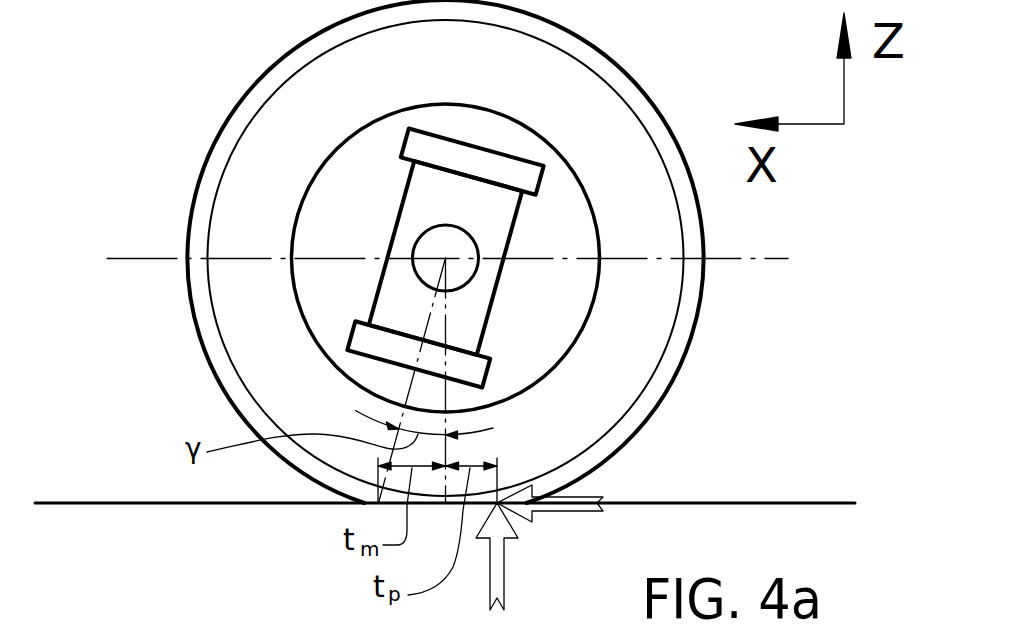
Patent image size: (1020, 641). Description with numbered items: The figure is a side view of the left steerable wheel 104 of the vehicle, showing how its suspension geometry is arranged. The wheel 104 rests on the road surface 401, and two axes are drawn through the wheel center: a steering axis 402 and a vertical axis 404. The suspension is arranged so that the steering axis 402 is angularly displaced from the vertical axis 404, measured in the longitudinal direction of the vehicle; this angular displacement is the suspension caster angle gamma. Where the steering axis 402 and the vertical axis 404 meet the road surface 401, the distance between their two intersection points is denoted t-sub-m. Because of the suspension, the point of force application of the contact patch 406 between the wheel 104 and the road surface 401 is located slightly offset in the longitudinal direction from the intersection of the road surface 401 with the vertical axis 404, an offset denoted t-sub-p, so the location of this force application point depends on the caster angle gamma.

The left steerable wheel 104 is at (642, 302).
The road surface 401 is at (208, 503).
The steering axis 402 is at (427, 324).
The vertical axis 404 is at (447, 328).
The contact patch 406 is at (500, 506).